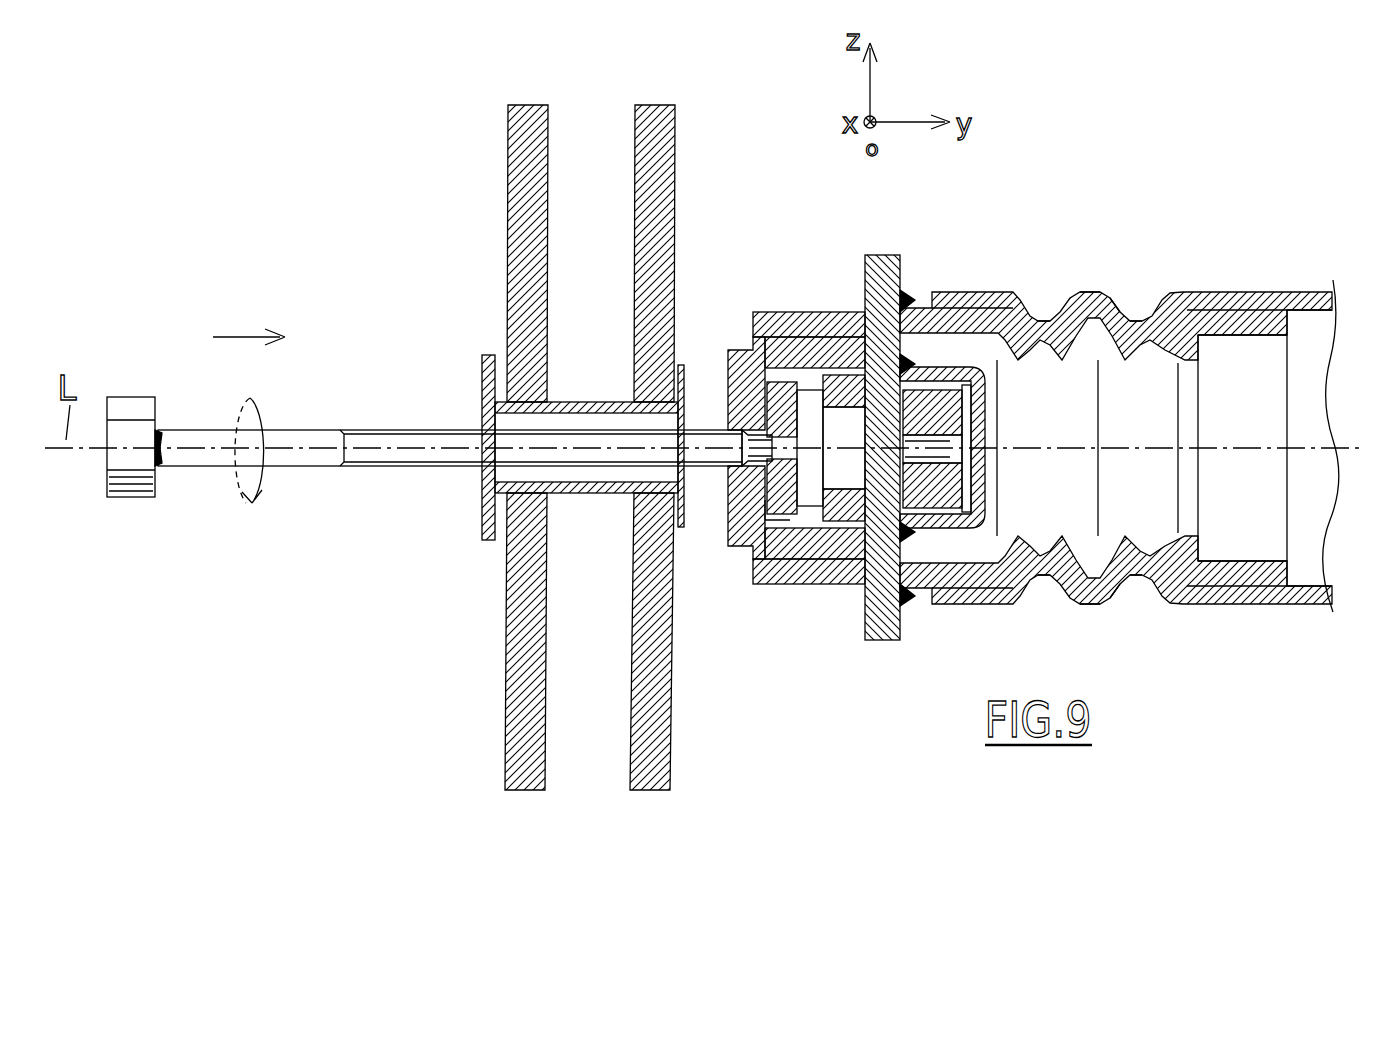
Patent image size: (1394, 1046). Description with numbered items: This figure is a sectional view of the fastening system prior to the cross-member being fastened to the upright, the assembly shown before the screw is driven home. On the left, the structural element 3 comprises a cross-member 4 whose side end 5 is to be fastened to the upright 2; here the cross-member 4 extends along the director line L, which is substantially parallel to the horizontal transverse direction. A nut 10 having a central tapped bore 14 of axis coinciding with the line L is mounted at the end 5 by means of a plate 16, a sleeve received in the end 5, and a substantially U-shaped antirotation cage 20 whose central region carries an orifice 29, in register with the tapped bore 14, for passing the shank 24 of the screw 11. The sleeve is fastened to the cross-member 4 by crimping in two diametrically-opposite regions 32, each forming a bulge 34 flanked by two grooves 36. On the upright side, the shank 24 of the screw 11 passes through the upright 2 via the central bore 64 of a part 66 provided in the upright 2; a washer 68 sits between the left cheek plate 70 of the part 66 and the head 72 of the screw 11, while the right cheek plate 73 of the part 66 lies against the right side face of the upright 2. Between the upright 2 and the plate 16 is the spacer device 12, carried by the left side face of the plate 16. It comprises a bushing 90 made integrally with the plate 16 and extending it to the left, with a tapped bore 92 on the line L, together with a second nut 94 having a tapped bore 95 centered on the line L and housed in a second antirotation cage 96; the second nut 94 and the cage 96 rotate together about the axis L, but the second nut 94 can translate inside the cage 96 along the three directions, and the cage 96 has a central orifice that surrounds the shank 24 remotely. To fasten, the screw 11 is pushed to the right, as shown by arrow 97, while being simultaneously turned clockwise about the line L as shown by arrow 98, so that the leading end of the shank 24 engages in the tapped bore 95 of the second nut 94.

The upright 2 is at (678, 212).
The structural element 3 is at (1200, 225).
The cross-member 4 is at (1270, 286).
The side end 5 is at (985, 292).
The nut 10 is at (960, 478).
The screw 11 is at (126, 505).
The spacer device 12 is at (767, 306).
The central tapped bore 14 is at (938, 420).
The plate 16 is at (880, 255).
The antirotation cage 20 is at (939, 538).
The shank 24 is at (410, 430).
The orifice 29 is at (987, 420).
The crimping region 32 is at (1125, 275).
The bulge 34 is at (1092, 292).
The groove 36 is at (1047, 298).
The central bore 64 is at (600, 402).
The part 66 is at (573, 498).
The washer 68 is at (485, 532).
The left cheek plate 70 is at (500, 372).
The head 72 is at (128, 397).
The right cheek plate 73 is at (670, 516).
The bushing 90 is at (796, 312).
The tapped bore 92 is at (838, 337).
The second nut 94 is at (752, 586).
The tapped bore 95 is at (768, 410).
The second antirotation cage 96 is at (737, 348).
The arrow 97 is at (232, 330).
The arrow 98 is at (266, 412).